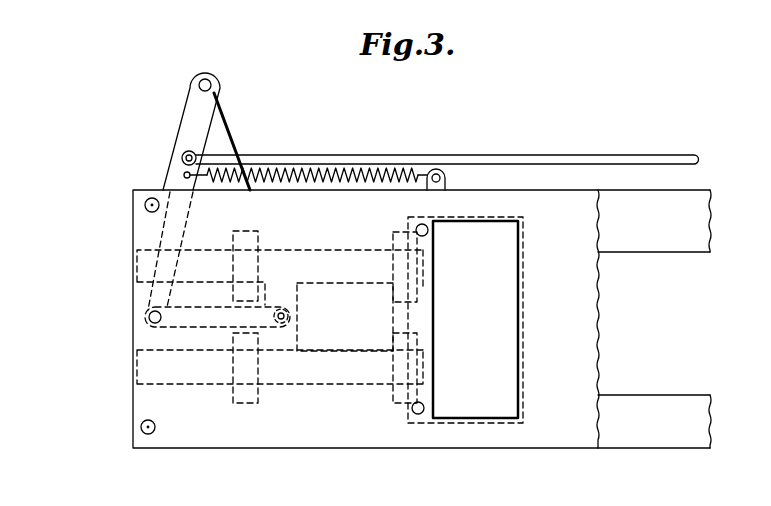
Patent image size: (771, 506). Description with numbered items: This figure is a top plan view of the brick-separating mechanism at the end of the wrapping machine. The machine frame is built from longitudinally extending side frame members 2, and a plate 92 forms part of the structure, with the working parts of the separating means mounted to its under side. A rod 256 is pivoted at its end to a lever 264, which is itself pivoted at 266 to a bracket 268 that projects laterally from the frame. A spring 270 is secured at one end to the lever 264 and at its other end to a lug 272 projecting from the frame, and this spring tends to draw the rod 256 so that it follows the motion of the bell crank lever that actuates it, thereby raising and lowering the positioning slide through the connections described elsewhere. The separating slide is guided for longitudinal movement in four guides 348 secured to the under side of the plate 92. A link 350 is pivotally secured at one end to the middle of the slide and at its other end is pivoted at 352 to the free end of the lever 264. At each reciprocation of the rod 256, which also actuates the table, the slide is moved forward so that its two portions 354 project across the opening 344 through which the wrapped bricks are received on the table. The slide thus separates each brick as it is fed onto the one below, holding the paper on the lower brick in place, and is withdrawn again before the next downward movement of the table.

The side frame member 2 is at (668, 243).
The plate 92 is at (593, 305).
The rod 256 is at (613, 165).
The lever 264 is at (193, 122).
The pivot 266 is at (211, 82).
The bracket 268 is at (228, 138).
The spring 270 is at (371, 170).
The lug 272 is at (447, 178).
The opening 344 is at (510, 343).
The guides 348 is at (248, 230).
The link 350 is at (207, 324).
The pivot 352 is at (149, 313).
The slide portions 354 is at (372, 351).